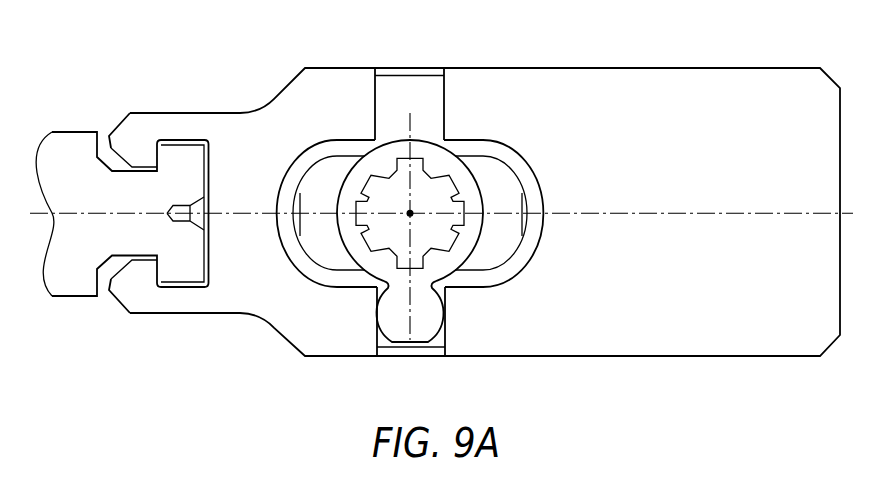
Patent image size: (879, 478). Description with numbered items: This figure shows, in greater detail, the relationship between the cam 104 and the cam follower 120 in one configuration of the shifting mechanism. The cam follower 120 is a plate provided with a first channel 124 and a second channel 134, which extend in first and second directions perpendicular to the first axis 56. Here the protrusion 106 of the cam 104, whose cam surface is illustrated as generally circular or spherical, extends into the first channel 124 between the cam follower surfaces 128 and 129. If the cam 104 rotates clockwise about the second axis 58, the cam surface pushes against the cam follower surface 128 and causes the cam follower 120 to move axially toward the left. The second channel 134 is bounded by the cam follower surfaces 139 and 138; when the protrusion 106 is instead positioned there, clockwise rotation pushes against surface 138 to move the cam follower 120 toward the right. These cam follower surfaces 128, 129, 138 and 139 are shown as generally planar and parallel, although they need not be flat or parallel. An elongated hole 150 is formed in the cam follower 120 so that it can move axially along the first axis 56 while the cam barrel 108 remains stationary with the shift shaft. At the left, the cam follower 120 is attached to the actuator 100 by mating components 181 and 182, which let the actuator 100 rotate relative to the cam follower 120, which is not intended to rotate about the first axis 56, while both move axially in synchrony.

The first axis 56 is at (713, 212).
The second axis 58 is at (408, 211).
The actuator 100 is at (73, 148).
The cam 104 is at (484, 175).
The protrusion 106 is at (431, 310).
The cam barrel 108 is at (480, 242).
The cam follower 120 is at (673, 87).
The first channel 124 is at (388, 348).
The cam follower surface 128 is at (372, 343).
The cam follower surface 129 is at (440, 337).
The second channel 134 is at (404, 90).
The cam follower surface 138 is at (444, 105).
The cam follower surface 139 is at (376, 106).
The elongated hole 150 is at (530, 193).
The mating component 181 is at (178, 158).
The mating component 182 is at (145, 302).